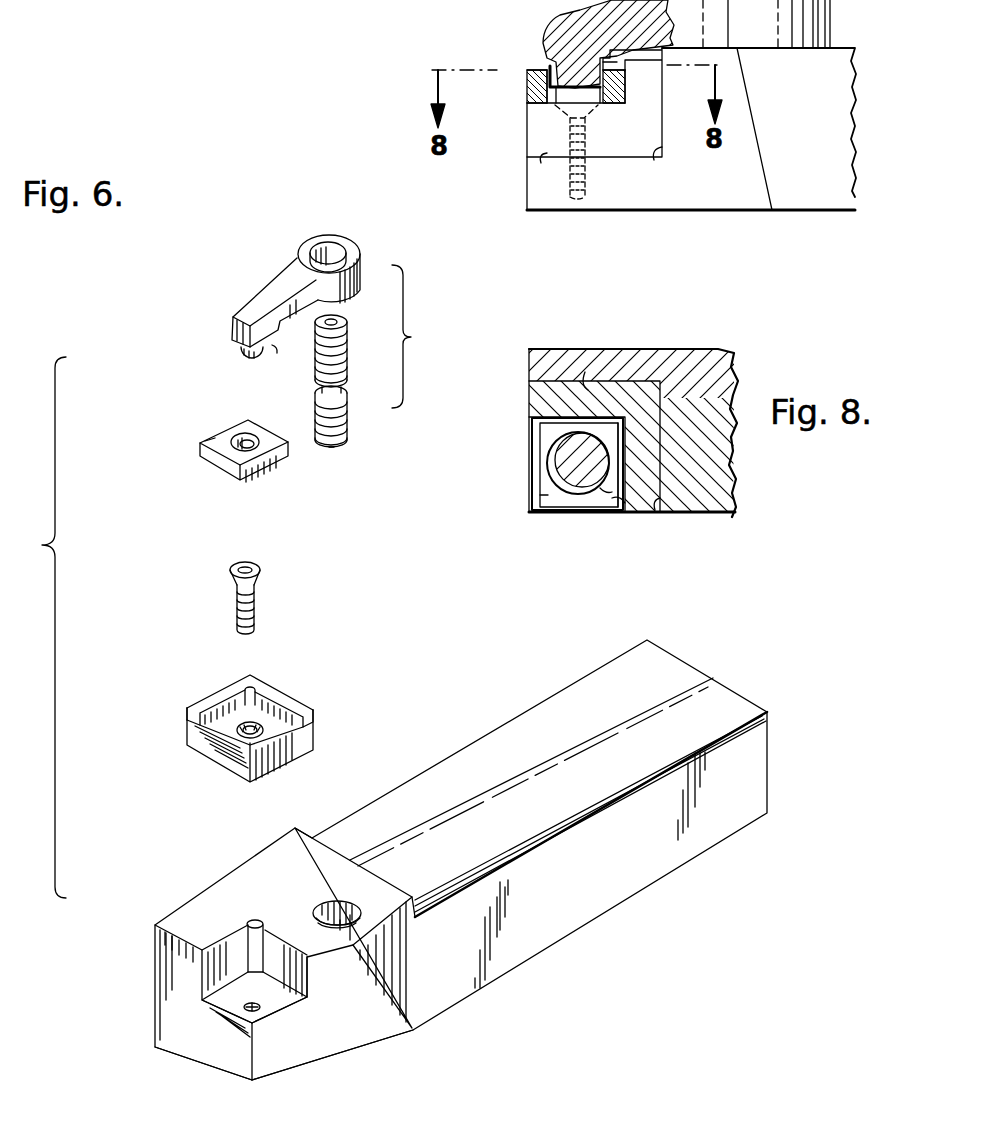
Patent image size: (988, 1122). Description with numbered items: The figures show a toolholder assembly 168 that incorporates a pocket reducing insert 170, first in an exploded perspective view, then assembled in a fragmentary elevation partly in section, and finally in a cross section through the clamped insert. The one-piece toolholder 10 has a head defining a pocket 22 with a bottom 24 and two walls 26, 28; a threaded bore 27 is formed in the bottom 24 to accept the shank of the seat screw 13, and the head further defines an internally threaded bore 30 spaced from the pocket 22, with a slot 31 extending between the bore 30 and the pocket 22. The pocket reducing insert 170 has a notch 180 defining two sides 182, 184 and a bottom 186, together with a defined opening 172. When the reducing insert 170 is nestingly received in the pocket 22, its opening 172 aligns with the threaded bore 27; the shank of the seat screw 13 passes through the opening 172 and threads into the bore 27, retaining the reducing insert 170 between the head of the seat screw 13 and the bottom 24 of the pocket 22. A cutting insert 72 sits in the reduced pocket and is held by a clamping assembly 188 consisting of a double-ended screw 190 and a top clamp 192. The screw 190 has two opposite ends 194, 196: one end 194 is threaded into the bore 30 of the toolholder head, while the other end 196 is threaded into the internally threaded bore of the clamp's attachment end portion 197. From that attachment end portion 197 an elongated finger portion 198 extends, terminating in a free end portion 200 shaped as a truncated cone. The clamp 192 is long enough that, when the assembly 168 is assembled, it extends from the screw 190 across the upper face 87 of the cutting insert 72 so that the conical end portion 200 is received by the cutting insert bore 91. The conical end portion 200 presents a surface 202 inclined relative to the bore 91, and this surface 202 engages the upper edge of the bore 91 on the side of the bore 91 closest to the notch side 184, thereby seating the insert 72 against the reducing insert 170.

In FIG. 7, the toolholder 10 is at (600, 218).
In FIG. 6, the toolholder 10 is at (705, 845).
In FIG. 8, the toolholder 10 is at (523, 520).
In FIG. 7, the seat screw 13 is at (588, 135).
In FIG. 6, the seat screw 13 is at (237, 604).
In FIG. 6, the pocket 22 is at (225, 955).
In FIG. 7, the bottom 24 is at (547, 153).
In FIG. 6, the bottom 24 is at (232, 1002).
In FIG. 6, the wall 26 is at (222, 978).
In FIG. 8, the wall 26 is at (585, 372).
In FIG. 7, the threaded bore 27 is at (581, 195).
In FIG. 6, the threaded bore 27 is at (262, 1014).
In FIG. 7, the wall 28 is at (657, 160).
In FIG. 6, the wall 28 is at (310, 988).
In FIG. 8, the wall 28 is at (655, 515).
In FIG. 6, the internally threaded bore 30 is at (345, 910).
In FIG. 6, the slot 31 is at (315, 930).
In FIG. 7, the cutting insert 72 is at (520, 62).
In FIG. 6, the cutting insert 72 is at (195, 452).
In FIG. 8, the cutting insert 72 is at (522, 490).
In FIG. 7, the upper face 87 is at (530, 52).
In FIG. 6, the upper face 87 is at (220, 436).
In FIG. 8, the upper face 87 is at (540, 497).
In FIG. 7, the cutting insert bore 91 is at (550, 112).
In FIG. 6, the cutting insert bore 91 is at (252, 436).
In FIG. 8, the cutting insert bore 91 is at (550, 462).
In FIG. 7, the toolholder assembly 168 is at (525, 30).
In FIG. 6, the toolholder assembly 168 is at (648, 940).
In FIG. 8, the toolholder assembly 168 is at (718, 525).
In FIG. 7, the pocket reducing insert 170 is at (515, 135).
In FIG. 6, the pocket reducing insert 170 is at (185, 728).
In FIG. 8, the pocket reducing insert 170 is at (523, 395).
In FIG. 6, the defined opening 172 is at (268, 735).
In FIG. 6, the notch 180 is at (222, 736).
In FIG. 6, the side 182 is at (218, 700).
In FIG. 8, the side 182 is at (548, 432).
In FIG. 7, the side 184 is at (625, 88).
In FIG. 6, the side 184 is at (275, 702).
In FIG. 8, the side 184 is at (612, 512).
In FIG. 7, the bottom 186 is at (545, 96).
In FIG. 6, the bottom 186 is at (290, 713).
In FIG. 6, the clamping assembly 188 is at (422, 336).
In FIG. 6, the double-ended screw 190 is at (348, 426).
In FIG. 6, the top clamp 192 is at (270, 272).
In FIG. 6, the end 194 is at (334, 448).
In FIG. 6, the end 196 is at (342, 322).
In FIG. 7, the attachment end portion 197 is at (818, 16).
In FIG. 6, the attachment end portion 197 is at (335, 232).
In FIG. 6, the finger portion 198 is at (262, 302).
In FIG. 7, the free end portion 200 is at (540, 84).
In FIG. 6, the free end portion 200 is at (245, 358).
In FIG. 8, the free end portion 200 is at (545, 500).
In FIG. 7, the surface 202 is at (622, 96).
In FIG. 6, the surface 202 is at (278, 353).
In FIG. 8, the surface 202 is at (598, 510).